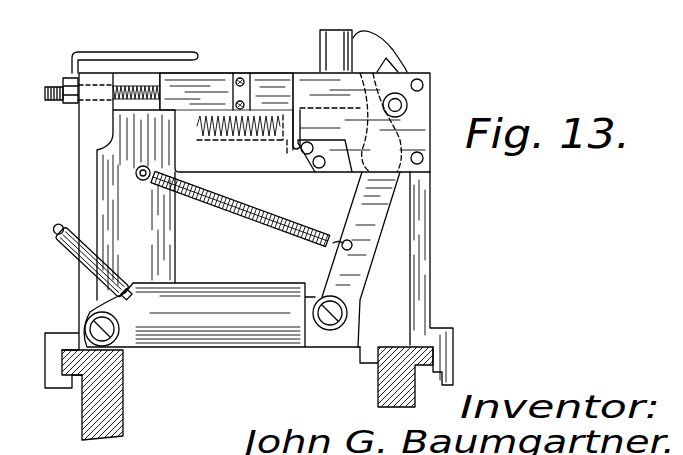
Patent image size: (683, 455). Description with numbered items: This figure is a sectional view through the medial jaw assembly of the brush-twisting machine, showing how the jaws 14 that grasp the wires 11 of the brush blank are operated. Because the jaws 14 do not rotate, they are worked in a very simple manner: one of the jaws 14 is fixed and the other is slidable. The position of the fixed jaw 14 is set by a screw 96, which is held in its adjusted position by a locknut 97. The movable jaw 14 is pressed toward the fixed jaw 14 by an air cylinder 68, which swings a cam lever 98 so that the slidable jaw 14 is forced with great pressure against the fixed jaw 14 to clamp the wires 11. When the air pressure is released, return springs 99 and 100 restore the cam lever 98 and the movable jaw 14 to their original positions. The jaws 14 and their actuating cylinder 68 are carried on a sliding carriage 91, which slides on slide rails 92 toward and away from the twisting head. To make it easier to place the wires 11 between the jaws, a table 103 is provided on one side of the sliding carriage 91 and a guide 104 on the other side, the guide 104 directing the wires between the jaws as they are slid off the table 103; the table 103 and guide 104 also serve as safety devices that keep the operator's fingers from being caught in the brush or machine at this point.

The wires 11 is at (238, 73).
The medial jaws 14 is at (207, 72).
The actuating cylinder 68 is at (215, 292).
The sliding carriage 91 is at (430, 308).
The slide rails 92 is at (123, 390).
The screw 96 is at (55, 100).
The locknut 97 is at (64, 79).
The cam lever 98 is at (352, 200).
The return spring 99 is at (242, 203).
The return spring 100 is at (242, 143).
The table 103 is at (155, 42).
The guide 104 is at (300, 68).